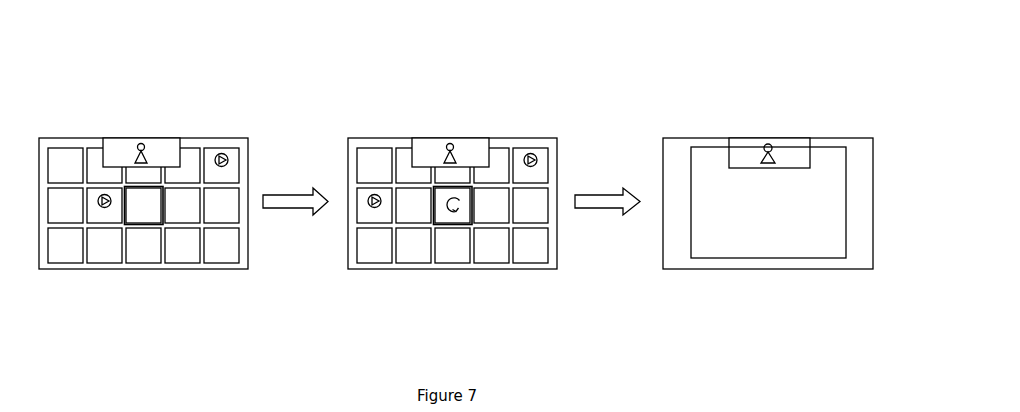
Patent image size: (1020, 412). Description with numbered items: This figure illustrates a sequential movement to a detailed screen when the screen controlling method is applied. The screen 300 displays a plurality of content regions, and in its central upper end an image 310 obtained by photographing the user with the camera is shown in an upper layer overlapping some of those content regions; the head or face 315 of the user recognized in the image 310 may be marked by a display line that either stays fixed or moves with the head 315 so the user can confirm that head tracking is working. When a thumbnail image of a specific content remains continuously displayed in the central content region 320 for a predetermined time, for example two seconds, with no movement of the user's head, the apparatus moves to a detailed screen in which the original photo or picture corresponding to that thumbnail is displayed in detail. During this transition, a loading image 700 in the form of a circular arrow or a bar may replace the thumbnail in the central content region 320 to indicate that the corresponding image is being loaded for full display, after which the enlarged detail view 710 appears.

The screen 300 is at (454, 186).
The image obtained by photographing the user 310 is at (439, 183).
The head or face of the user 315 is at (456, 135).
The central content region 320 is at (291, 245).
The loading image 700 is at (476, 250).
The enlarged menu item view 710 is at (805, 206).